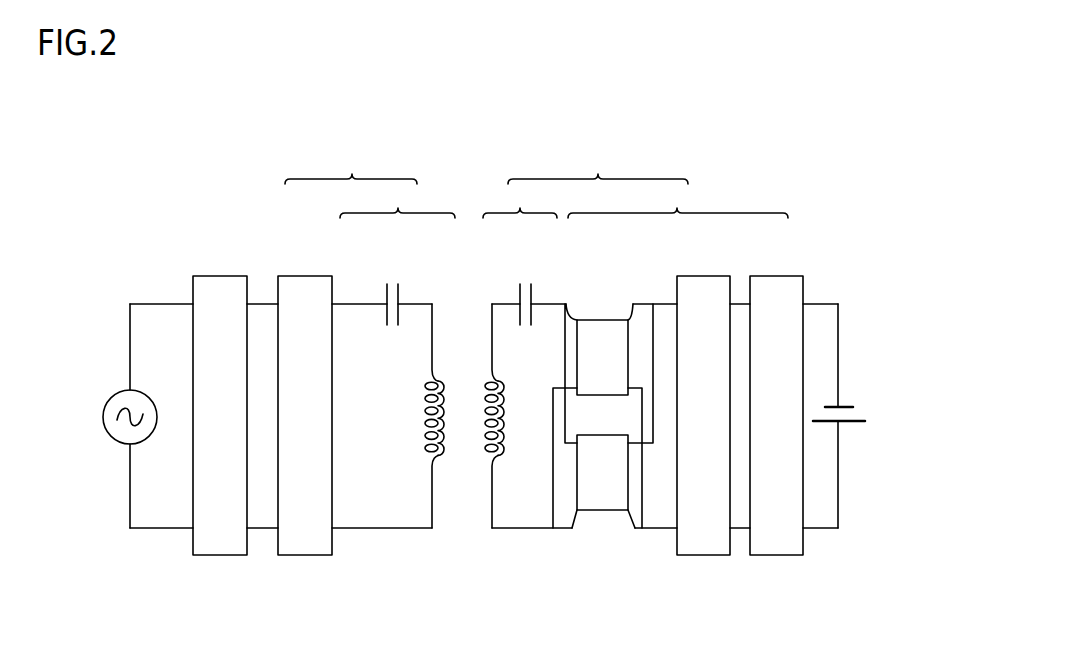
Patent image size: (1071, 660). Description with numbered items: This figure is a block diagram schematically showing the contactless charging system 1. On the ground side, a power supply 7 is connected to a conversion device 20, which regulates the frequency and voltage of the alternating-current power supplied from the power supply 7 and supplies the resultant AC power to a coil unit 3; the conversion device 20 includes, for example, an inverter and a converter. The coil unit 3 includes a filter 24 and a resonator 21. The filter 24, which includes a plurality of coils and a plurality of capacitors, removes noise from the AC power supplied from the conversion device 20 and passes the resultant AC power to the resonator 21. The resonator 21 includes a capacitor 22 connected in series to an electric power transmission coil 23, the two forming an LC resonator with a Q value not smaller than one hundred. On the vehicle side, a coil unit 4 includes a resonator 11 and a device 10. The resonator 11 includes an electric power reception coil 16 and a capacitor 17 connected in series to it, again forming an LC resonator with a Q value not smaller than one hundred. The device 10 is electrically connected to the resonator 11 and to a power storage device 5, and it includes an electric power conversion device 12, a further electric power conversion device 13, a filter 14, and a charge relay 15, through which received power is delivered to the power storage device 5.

The contactless charging system 1 is at (483, 174).
The coil unit 3 is at (351, 165).
The coil unit 4 is at (598, 166).
The power storage device 5 is at (846, 406).
The power supply 7 is at (104, 416).
The device 10 is at (678, 199).
The resonator 11 is at (520, 199).
The electric power conversion device 12 is at (592, 327).
The electric power conversion device 13 is at (613, 433).
The filter 14 is at (700, 275).
The charge relay 15 is at (777, 275).
The electric power reception coil 16 is at (487, 392).
The capacitor 17 is at (533, 296).
The conversion device 20 is at (222, 275).
The resonator 21 is at (397, 199).
The capacitor 22 is at (385, 296).
The electric power transmission coil 23 is at (445, 390).
The filter 24 is at (303, 275).